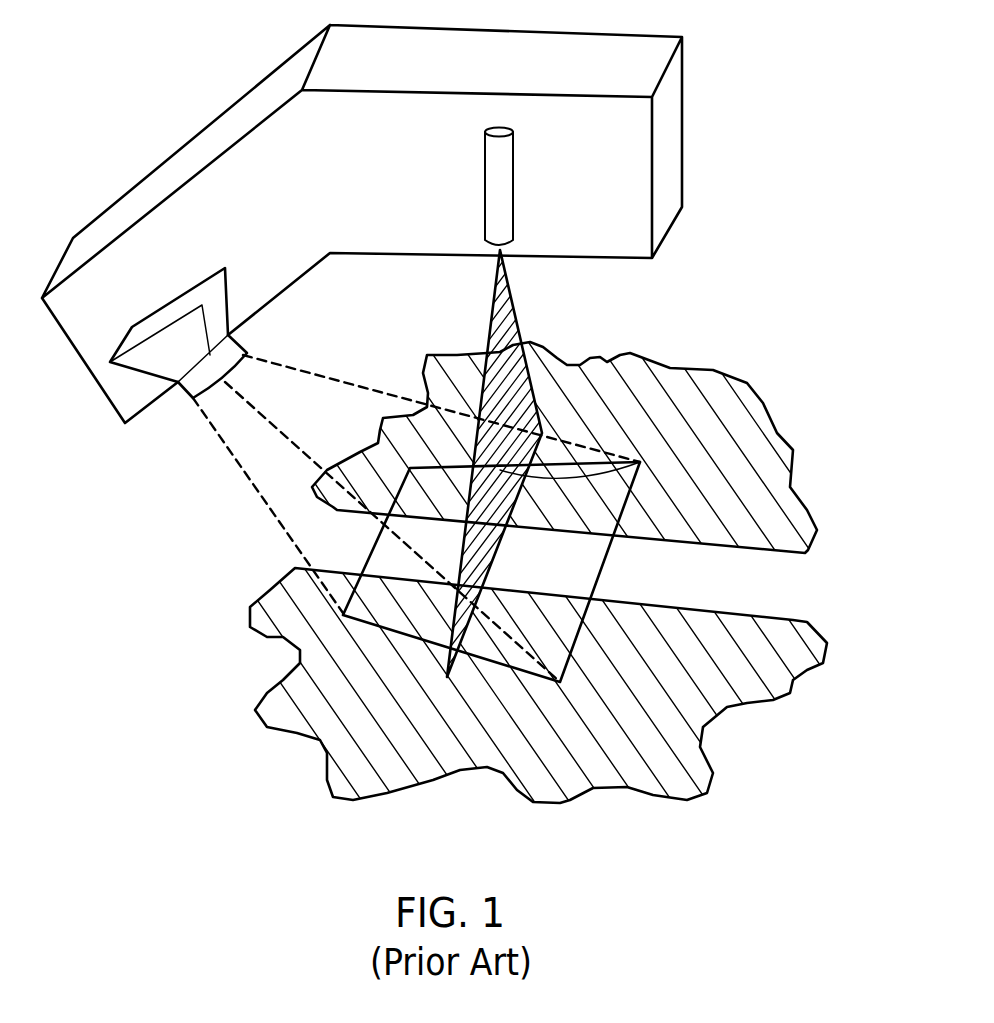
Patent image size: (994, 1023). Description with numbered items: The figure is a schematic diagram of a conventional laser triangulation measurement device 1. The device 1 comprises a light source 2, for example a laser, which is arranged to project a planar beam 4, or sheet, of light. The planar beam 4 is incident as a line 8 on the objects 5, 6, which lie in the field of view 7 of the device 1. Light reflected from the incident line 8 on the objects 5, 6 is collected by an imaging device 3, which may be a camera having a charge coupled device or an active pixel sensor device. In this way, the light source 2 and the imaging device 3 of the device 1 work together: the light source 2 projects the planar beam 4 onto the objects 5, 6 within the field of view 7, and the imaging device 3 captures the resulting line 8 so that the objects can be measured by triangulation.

The laser triangulation measurement device 1 is at (297, 162).
The light source 2 is at (518, 183).
The imaging device 3 is at (213, 307).
The planar beam 4 is at (500, 380).
The object 5 is at (778, 452).
The object 6 is at (732, 685).
The field of view 7 is at (390, 550).
The line 8 is at (520, 509).